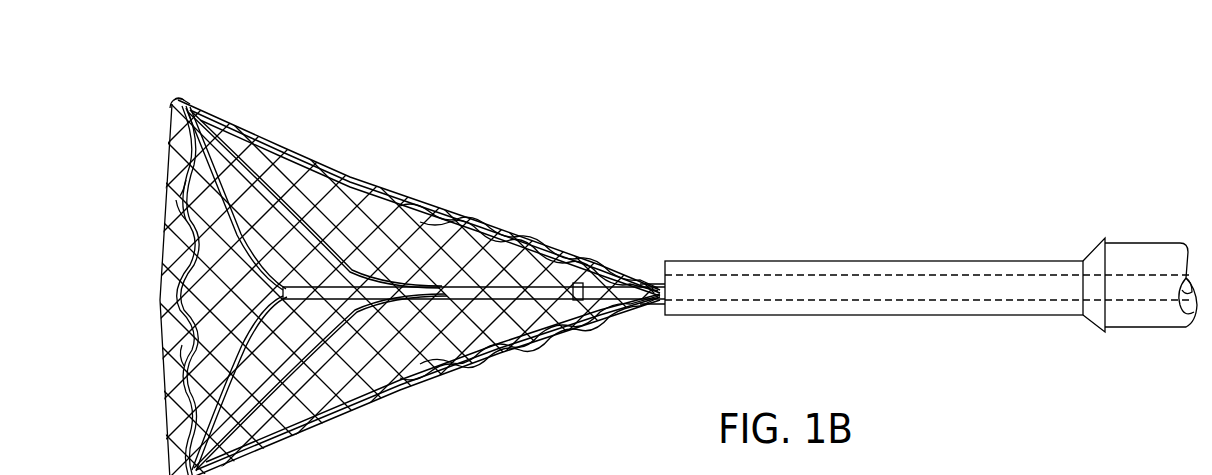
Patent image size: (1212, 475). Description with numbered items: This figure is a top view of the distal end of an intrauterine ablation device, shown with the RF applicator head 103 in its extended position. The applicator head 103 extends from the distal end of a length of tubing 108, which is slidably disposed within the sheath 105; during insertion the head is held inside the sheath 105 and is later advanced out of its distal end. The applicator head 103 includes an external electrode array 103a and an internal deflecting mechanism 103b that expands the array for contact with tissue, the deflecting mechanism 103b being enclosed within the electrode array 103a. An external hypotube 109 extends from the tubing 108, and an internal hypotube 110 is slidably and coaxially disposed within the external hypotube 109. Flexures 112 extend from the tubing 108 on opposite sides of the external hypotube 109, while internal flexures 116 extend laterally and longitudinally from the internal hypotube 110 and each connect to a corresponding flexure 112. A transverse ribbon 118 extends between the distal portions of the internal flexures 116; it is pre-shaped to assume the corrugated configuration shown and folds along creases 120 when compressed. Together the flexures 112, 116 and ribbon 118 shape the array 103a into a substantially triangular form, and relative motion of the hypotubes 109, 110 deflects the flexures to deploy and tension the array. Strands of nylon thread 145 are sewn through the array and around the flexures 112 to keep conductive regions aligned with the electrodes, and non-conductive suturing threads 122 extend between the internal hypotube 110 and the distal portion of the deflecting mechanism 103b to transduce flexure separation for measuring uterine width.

The RF applicator head 103 is at (168, 75).
The external electrode array 103a is at (188, 100).
The internal deflecting mechanism 103b is at (176, 186).
The sheath 105 is at (897, 261).
The tubing 108 is at (762, 300).
The external hypotube 109 is at (604, 262).
The internal hypotube 110 is at (480, 240).
The flexures 112 is at (388, 192).
The internal flexures 116 is at (284, 160).
The transverse ribbon 118 is at (180, 350).
The creases 120 is at (162, 296).
The suturing threads 122 is at (173, 207).
The strands of nylon thread 145 is at (552, 250).